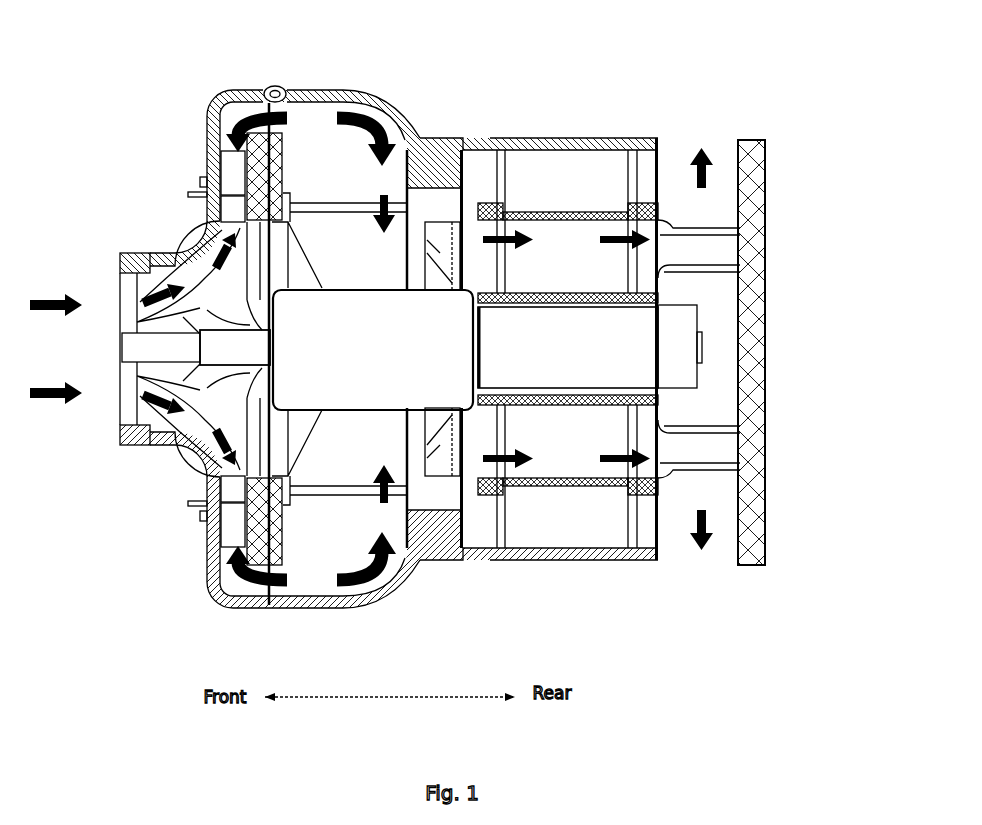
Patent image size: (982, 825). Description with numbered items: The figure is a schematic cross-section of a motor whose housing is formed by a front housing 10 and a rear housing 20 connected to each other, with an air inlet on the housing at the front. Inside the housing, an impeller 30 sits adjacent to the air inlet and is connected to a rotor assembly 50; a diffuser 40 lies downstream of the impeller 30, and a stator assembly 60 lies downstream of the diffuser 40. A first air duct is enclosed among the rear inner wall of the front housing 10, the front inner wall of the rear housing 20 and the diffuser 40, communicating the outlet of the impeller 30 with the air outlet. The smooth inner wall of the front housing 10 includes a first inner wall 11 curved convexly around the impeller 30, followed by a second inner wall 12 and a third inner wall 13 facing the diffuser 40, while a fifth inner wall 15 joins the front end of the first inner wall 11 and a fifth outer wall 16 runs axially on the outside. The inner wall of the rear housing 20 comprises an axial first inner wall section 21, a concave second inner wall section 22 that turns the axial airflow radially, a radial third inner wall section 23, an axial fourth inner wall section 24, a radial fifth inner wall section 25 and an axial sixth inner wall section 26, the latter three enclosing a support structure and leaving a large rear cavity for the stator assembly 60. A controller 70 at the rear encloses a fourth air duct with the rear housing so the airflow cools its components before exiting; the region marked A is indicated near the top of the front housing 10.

The front housing 10 is at (208, 135).
The first inner wall 11 is at (185, 253).
The second inner wall 12 is at (203, 180).
The third inner wall 13 is at (233, 102).
The fifth inner wall 15 is at (120, 268).
The fifth outer wall 16 is at (273, 607).
The rear housing 20 is at (350, 98).
The first inner wall section 21 is at (308, 90).
The second inner wall section 22 is at (378, 110).
The third inner wall section 23 is at (420, 140).
The fourth inner wall section 24 is at (442, 185).
The fifth inner wall section 25 is at (463, 152).
The sixth inner wall section 26 is at (610, 148).
The impeller 30 is at (147, 337).
The diffuser 40 is at (258, 165).
The rotor assembly 50 is at (230, 347).
The stator assembly 60 is at (593, 485).
The controller 70 is at (765, 290).
The detail A is at (275, 85).